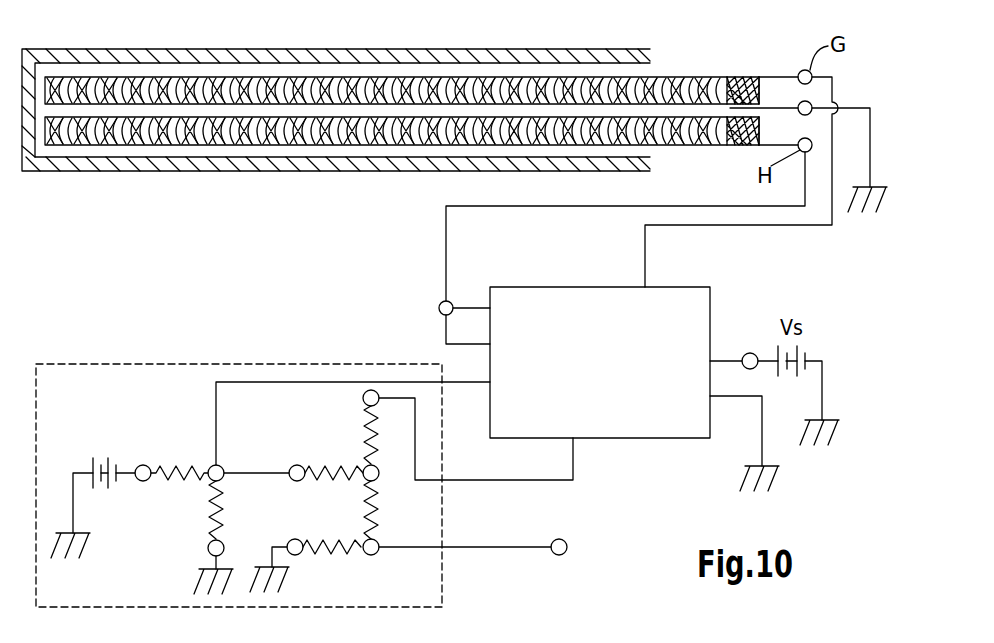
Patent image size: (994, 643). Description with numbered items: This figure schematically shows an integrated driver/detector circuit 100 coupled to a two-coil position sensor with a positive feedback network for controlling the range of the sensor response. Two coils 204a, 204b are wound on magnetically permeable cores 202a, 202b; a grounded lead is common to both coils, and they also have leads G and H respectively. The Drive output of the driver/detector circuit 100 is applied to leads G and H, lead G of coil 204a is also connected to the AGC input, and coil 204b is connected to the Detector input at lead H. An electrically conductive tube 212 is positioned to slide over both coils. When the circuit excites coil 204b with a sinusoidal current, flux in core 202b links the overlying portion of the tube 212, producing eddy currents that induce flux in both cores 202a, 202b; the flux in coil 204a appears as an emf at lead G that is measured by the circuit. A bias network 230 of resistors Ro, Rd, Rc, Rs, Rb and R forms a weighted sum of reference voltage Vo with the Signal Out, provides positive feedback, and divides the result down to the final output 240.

The electrically conductive tube 212 is at (336, 58).
The coil 204a is at (247, 92).
The coil 204b is at (248, 134).
The magnetically permeable core 202a is at (746, 77).
The magnetically permeable core 202b is at (746, 146).
The driver/detector circuit 100 is at (697, 428).
The bias network 230 is at (442, 572).
The final output 240 is at (567, 545).